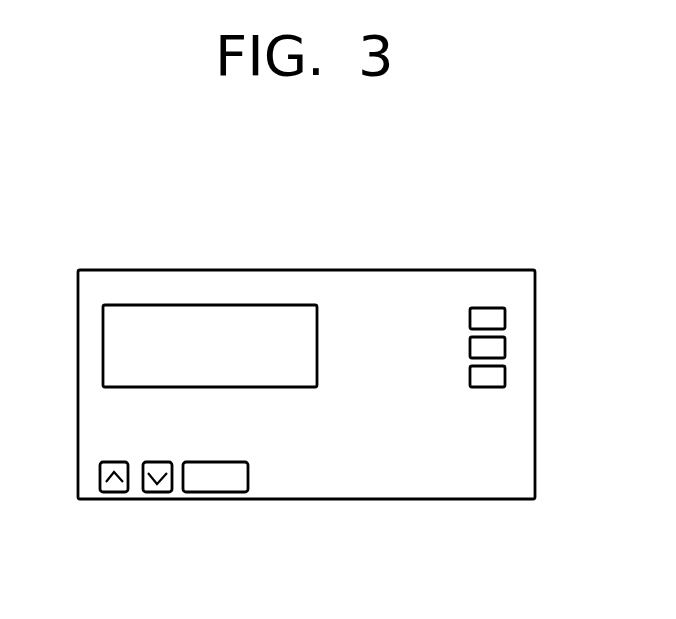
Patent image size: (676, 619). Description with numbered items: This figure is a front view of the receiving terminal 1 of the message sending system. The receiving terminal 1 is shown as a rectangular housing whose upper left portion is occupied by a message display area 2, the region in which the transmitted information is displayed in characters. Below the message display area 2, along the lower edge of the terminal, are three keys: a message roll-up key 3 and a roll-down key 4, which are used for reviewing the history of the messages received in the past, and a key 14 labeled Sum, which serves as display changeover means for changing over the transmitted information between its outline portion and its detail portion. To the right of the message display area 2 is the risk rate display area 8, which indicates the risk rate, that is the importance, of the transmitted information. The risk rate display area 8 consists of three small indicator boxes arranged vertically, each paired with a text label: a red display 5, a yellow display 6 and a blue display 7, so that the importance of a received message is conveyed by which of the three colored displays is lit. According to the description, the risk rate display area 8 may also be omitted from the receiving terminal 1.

The receiving terminal 1 is at (218, 263).
The message display area 2 is at (143, 330).
The message roll-up key 3 is at (113, 492).
The roll-down key 4 is at (155, 492).
The red display 5 is at (505, 318).
The yellow display 6 is at (505, 348).
The blue display 7 is at (505, 377).
The risk rate display area 8 is at (402, 305).
The key 14 is at (212, 492).